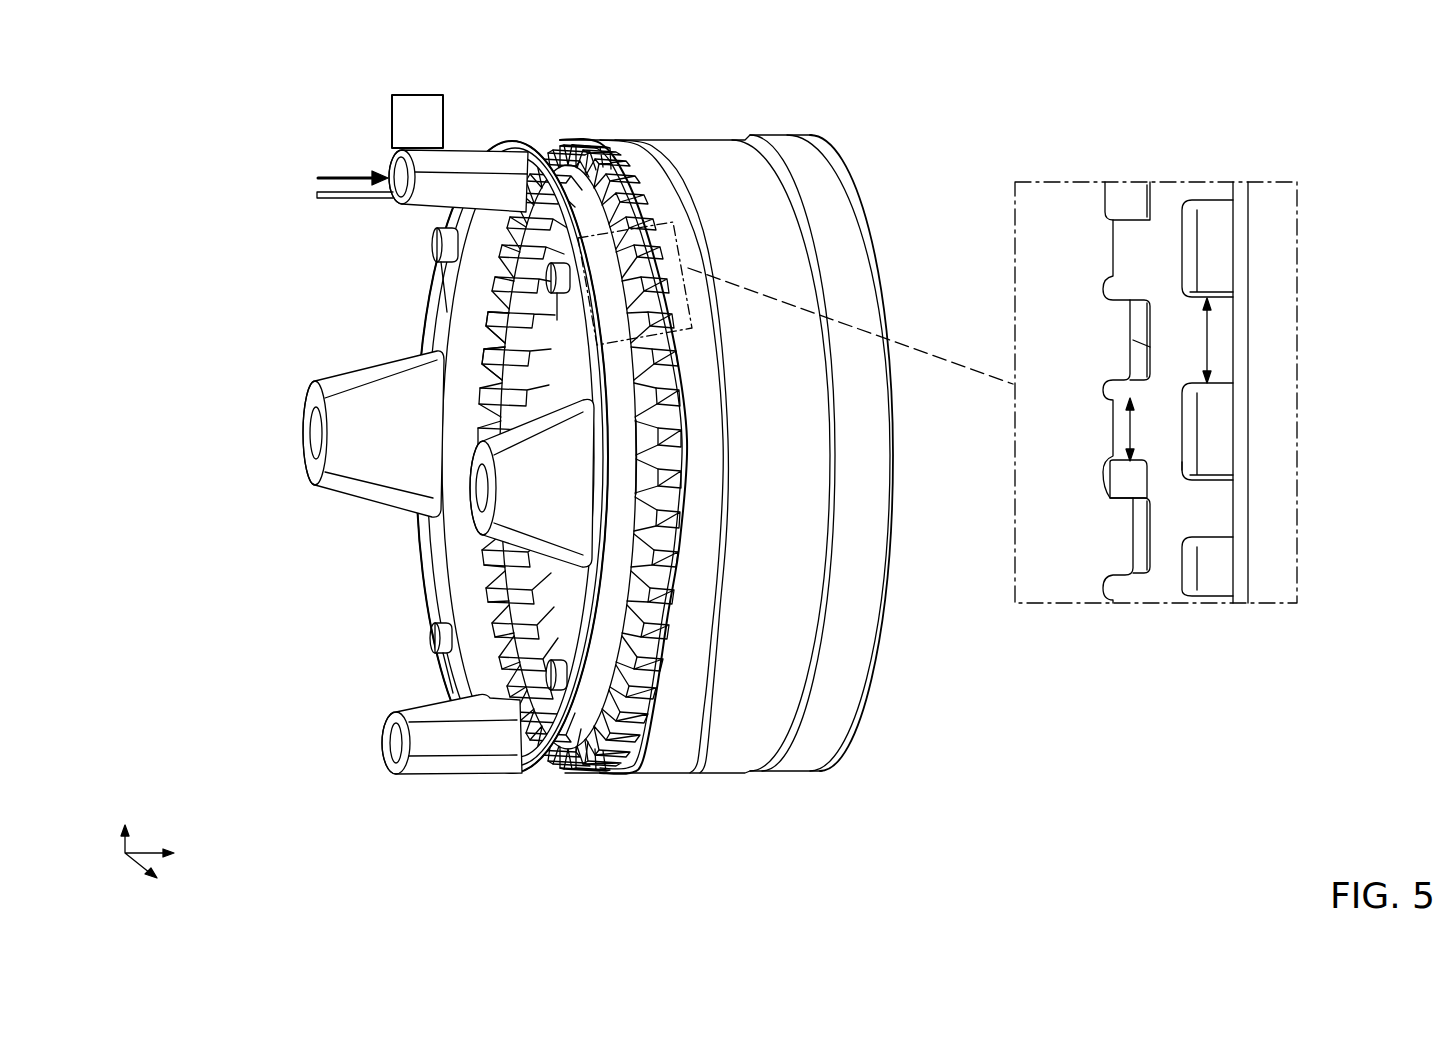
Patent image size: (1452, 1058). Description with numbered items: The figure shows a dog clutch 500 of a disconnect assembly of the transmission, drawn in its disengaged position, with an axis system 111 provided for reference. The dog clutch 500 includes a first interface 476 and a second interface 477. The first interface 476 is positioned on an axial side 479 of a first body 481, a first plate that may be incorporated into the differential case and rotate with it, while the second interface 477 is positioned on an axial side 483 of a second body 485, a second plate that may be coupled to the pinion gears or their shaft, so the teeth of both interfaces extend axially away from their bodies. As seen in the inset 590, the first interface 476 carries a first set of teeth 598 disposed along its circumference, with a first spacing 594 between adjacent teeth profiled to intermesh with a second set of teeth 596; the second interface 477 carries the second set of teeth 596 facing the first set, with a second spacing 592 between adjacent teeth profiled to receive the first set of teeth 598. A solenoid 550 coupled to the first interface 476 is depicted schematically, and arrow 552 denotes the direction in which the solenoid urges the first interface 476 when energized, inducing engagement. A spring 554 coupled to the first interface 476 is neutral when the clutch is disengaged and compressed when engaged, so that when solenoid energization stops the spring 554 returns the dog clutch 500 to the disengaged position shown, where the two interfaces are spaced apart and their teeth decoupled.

The dog clutch 500 is at (289, 128).
The solenoid 550 is at (391, 133).
The arrow 552 is at (368, 179).
The spring 554 is at (353, 204).
The first interface 476 is at (547, 118).
The second interface 477 is at (578, 118).
The first body 481 is at (470, 297).
The axial side 483 is at (478, 356).
The axial side 479 is at (517, 341).
The second body 485 is at (550, 398).
The inset 590 is at (1062, 180).
The second spacing 592 is at (1207, 348).
The first spacing 594 is at (1130, 435).
The second set of teeth 596 is at (1179, 463).
The first set of teeth 598 is at (1150, 347).
The axis system 111 is at (121, 794).